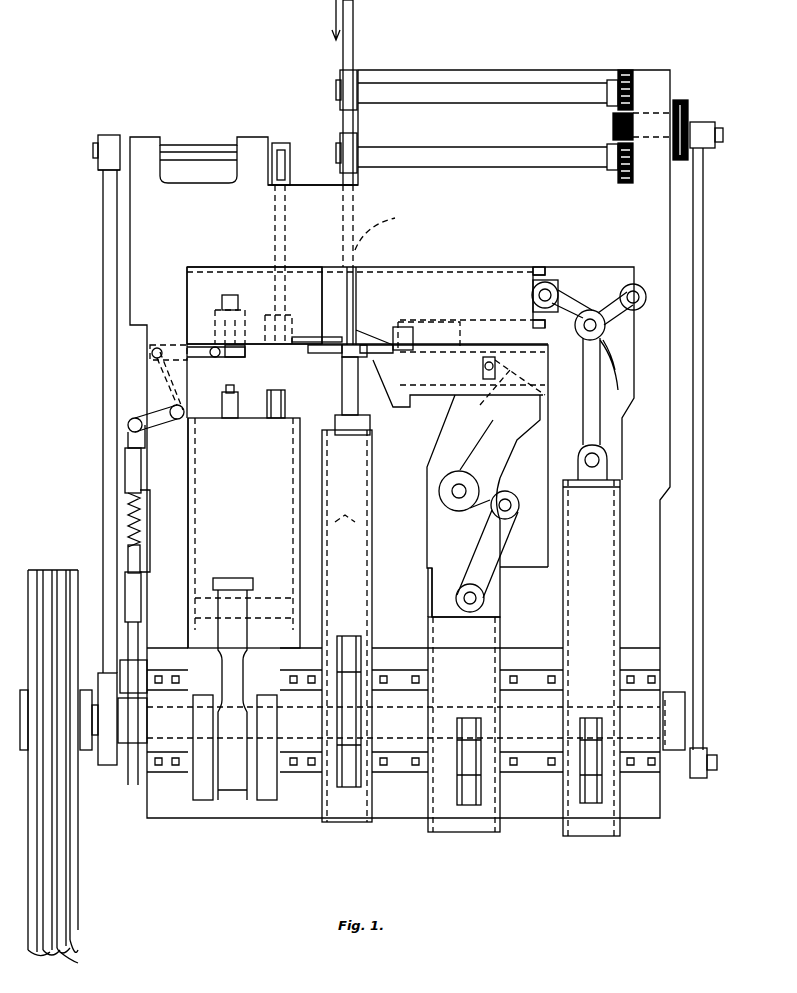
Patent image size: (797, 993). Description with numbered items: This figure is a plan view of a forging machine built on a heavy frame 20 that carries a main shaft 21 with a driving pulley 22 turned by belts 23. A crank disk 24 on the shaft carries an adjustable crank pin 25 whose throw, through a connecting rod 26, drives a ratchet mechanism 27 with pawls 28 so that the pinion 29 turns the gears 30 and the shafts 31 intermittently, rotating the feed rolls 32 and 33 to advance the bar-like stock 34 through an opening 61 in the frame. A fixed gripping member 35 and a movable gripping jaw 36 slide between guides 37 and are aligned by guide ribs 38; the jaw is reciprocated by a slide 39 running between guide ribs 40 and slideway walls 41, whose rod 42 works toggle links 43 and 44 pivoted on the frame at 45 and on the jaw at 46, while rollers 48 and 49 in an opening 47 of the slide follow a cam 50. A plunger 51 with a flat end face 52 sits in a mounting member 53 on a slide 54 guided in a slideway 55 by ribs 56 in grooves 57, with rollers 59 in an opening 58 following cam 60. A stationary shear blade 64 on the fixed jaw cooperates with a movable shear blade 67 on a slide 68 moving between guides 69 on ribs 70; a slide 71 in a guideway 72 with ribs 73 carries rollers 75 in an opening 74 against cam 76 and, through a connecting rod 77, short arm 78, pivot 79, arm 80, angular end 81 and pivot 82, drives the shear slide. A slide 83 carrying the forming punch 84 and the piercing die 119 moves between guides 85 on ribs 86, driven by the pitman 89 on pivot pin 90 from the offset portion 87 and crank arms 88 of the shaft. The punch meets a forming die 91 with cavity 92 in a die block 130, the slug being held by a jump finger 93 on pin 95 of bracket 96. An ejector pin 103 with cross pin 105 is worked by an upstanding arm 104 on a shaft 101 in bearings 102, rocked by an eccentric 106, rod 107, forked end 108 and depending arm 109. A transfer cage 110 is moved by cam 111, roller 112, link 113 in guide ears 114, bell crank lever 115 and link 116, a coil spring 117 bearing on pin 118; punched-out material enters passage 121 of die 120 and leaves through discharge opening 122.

The frame 20 is at (650, 540).
The main shaft 21 is at (667, 663).
The driving pulley 22 is at (78, 815).
The belts 23 is at (79, 961).
The crank disk 24 is at (690, 682).
The crank pin 25 is at (715, 758).
The connecting rod 26 is at (705, 577).
The ratchet mechanism 27 is at (685, 110).
The pawl 28 is at (700, 160).
The pinion 29 is at (613, 128).
The gears 30 is at (626, 70).
The shafts 31 is at (512, 85).
The feed roll 32 is at (340, 142).
The feed roll 33 is at (340, 78).
The bar-like member (stock) 34 is at (356, 38).
The gripping member 35 is at (330, 275).
The movable gripping jaw 36 is at (380, 266).
The guides 37 is at (478, 266).
The guide ribs 38 is at (540, 266).
The slide 39 is at (600, 530).
The guide ribs 40 is at (612, 452).
The walls 41 is at (620, 605).
The rod 42 is at (595, 380).
The toggle link 43 is at (615, 348).
The toggle link 44 is at (567, 312).
The pivot 45 is at (636, 308).
The pivot 46 is at (533, 296).
The opening 47 is at (602, 760).
The roller 48 is at (590, 662).
The roller 49 is at (590, 762).
The cam 50 is at (580, 752).
The plunger 51 is at (342, 400).
The flat end face 52 is at (346, 370).
The mounting member 53 is at (340, 432).
The slide 54 is at (372, 546).
The slideway 55 is at (318, 545).
The guide ribs 56 is at (312, 428).
The grooves 57 is at (346, 510).
The opening 58 is at (362, 650).
The rollers 59 is at (355, 635).
The cam 60 is at (345, 740).
The opening 61 is at (387, 227).
The stationary shear blade 64 is at (374, 306).
The movable shear blade 67 is at (394, 329).
The slide 68 is at (428, 340).
The guides 69 is at (412, 322).
The guide ribs 70 is at (380, 386).
The slide 71 is at (488, 646).
The guideway 72 is at (428, 635).
The guide ribs 73 is at (428, 580).
The opening 74 is at (465, 762).
The rollers 75 is at (470, 662).
The cam 76 is at (435, 752).
The connecting rod 77 is at (512, 518).
The short arm 78 is at (485, 512).
The pivot 79 is at (455, 490).
The arm 80 is at (497, 440).
The angular end portion 81 is at (494, 393).
The pivot 82 is at (483, 368).
The slide 83 is at (232, 515).
The forming punch 84 is at (267, 419).
The guides 85 is at (188, 470).
The guide ribs 86 is at (212, 420).
The offset portion 87 is at (232, 800).
The crank arms 88 is at (203, 795).
The pitman 89 is at (232, 672).
The pivot pin 90 is at (232, 577).
The forming die 91 is at (294, 265).
The cavity 92 is at (292, 265).
The jump finger 93 is at (325, 354).
The pin 95 is at (310, 354).
The bracket 96 is at (315, 336).
The shaft 101 is at (190, 150).
The bearings 102 is at (150, 145).
The ejector pin 103 is at (282, 184).
The upstanding arm 104 is at (280, 143).
The cross pin 105 is at (292, 160).
The eccentric 106 is at (108, 766).
The rod 107 is at (105, 392).
The forked end 108 is at (105, 168).
The depending arm 109 is at (112, 138).
The transfer cage 110 is at (240, 358).
The cam 111 is at (133, 790).
The roller 112 is at (140, 660).
The link 113 is at (133, 560).
The guide ears 114 is at (127, 468).
The bell crank lever 115 is at (147, 382).
The link 116 is at (200, 358).
The coil spring 117 is at (128, 520).
The pin 118 is at (148, 556).
The piercing die 119 is at (225, 420).
The die 120 is at (215, 328).
The passage 121 is at (246, 315).
The discharge opening 122 is at (252, 315).
The die block 130 is at (218, 275).